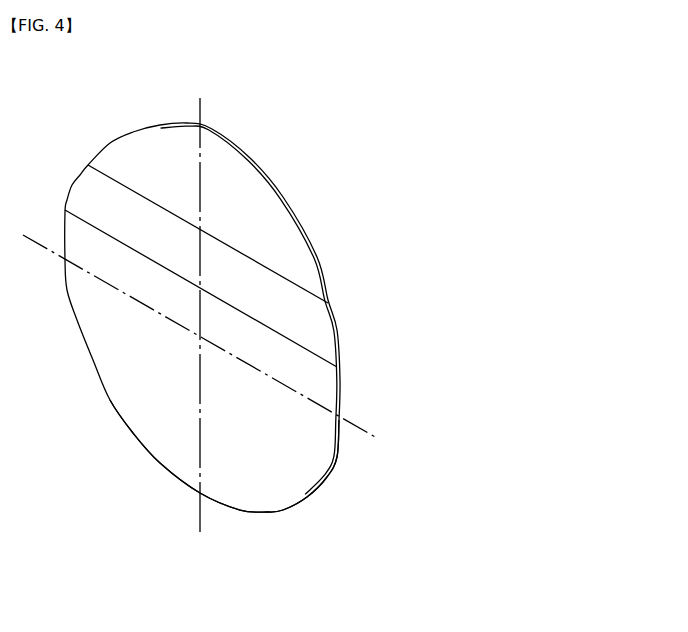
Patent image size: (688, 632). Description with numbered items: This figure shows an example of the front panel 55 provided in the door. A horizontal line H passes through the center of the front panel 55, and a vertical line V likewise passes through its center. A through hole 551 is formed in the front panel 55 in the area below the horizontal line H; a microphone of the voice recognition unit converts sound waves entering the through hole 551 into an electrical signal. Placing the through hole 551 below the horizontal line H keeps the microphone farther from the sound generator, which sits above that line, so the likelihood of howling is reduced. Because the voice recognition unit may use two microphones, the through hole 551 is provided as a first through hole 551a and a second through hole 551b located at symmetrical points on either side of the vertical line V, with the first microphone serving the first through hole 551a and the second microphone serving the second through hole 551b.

The front panel 55 is at (90, 187).
The through hole 551 is at (224, 501).
The first through hole 551a is at (168, 447).
The second through hole 551b is at (272, 494).